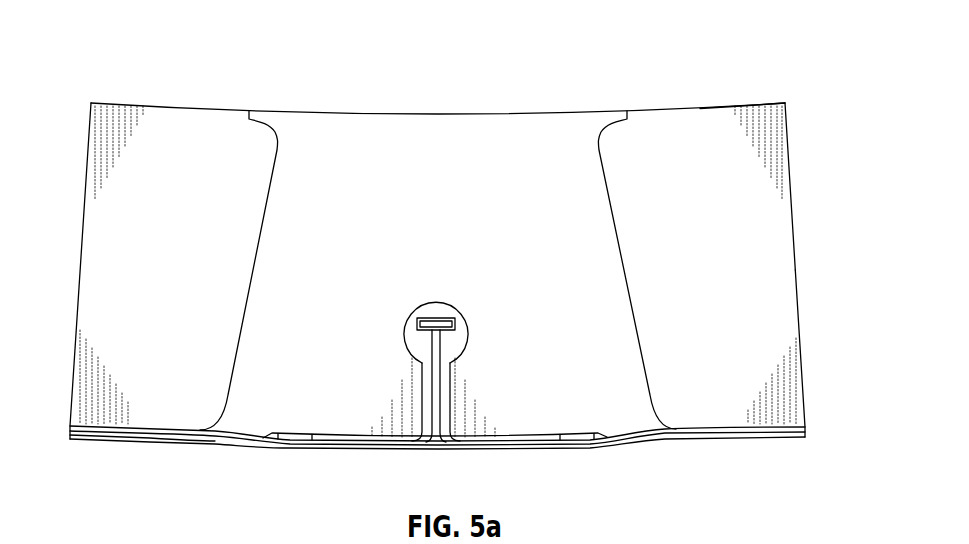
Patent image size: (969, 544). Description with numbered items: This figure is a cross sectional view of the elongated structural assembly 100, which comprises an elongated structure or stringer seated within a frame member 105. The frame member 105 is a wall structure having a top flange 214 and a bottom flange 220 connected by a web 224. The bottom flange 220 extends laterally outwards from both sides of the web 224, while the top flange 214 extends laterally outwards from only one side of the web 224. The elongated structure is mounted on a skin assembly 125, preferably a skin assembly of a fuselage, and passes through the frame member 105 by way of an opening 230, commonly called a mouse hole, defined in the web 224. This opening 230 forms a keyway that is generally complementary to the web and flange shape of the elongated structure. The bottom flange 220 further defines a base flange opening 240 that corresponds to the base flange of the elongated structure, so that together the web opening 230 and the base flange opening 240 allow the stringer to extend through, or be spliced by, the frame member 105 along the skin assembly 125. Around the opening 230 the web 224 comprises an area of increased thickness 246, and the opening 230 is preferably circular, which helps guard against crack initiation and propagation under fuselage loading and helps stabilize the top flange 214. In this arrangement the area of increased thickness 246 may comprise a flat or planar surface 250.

The elongated structural assembly 100 is at (634, 70).
The frame member 105 is at (325, 104).
The top flange 214 is at (727, 106).
The web 224 is at (797, 283).
The bottom flange 220 is at (803, 397).
The flat or planar surface 250 is at (497, 355).
The skin assembly 125 is at (800, 440).
The base flange opening 240 is at (577, 444).
The opening (mouse hole) 230 is at (436, 312).
The area of increased thickness 246 is at (505, 277).